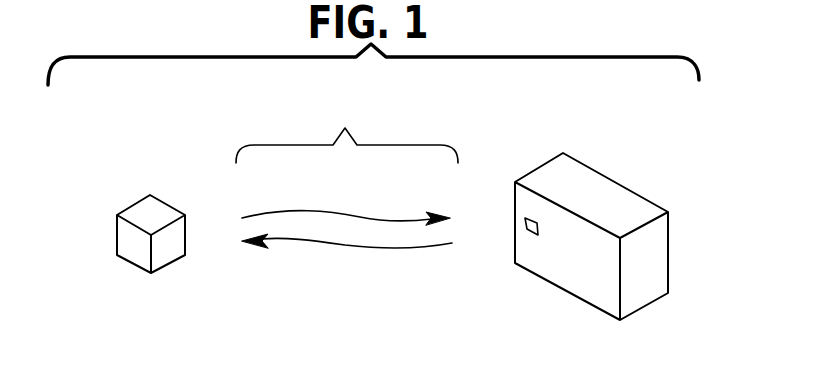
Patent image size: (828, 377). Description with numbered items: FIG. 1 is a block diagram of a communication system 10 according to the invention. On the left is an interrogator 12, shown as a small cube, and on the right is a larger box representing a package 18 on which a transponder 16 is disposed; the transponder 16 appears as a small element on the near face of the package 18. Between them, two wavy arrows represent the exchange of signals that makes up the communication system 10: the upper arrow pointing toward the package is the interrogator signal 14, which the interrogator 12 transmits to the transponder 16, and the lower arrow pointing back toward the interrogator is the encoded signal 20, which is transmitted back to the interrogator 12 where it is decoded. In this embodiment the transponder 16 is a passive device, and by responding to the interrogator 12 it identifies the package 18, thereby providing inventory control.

The communication system 10 is at (347, 132).
The interrogator 12 is at (137, 206).
The interrogator signal 14 is at (331, 214).
The transponder 16 is at (532, 236).
The package 18 is at (590, 168).
The encoded signal 20 is at (342, 246).